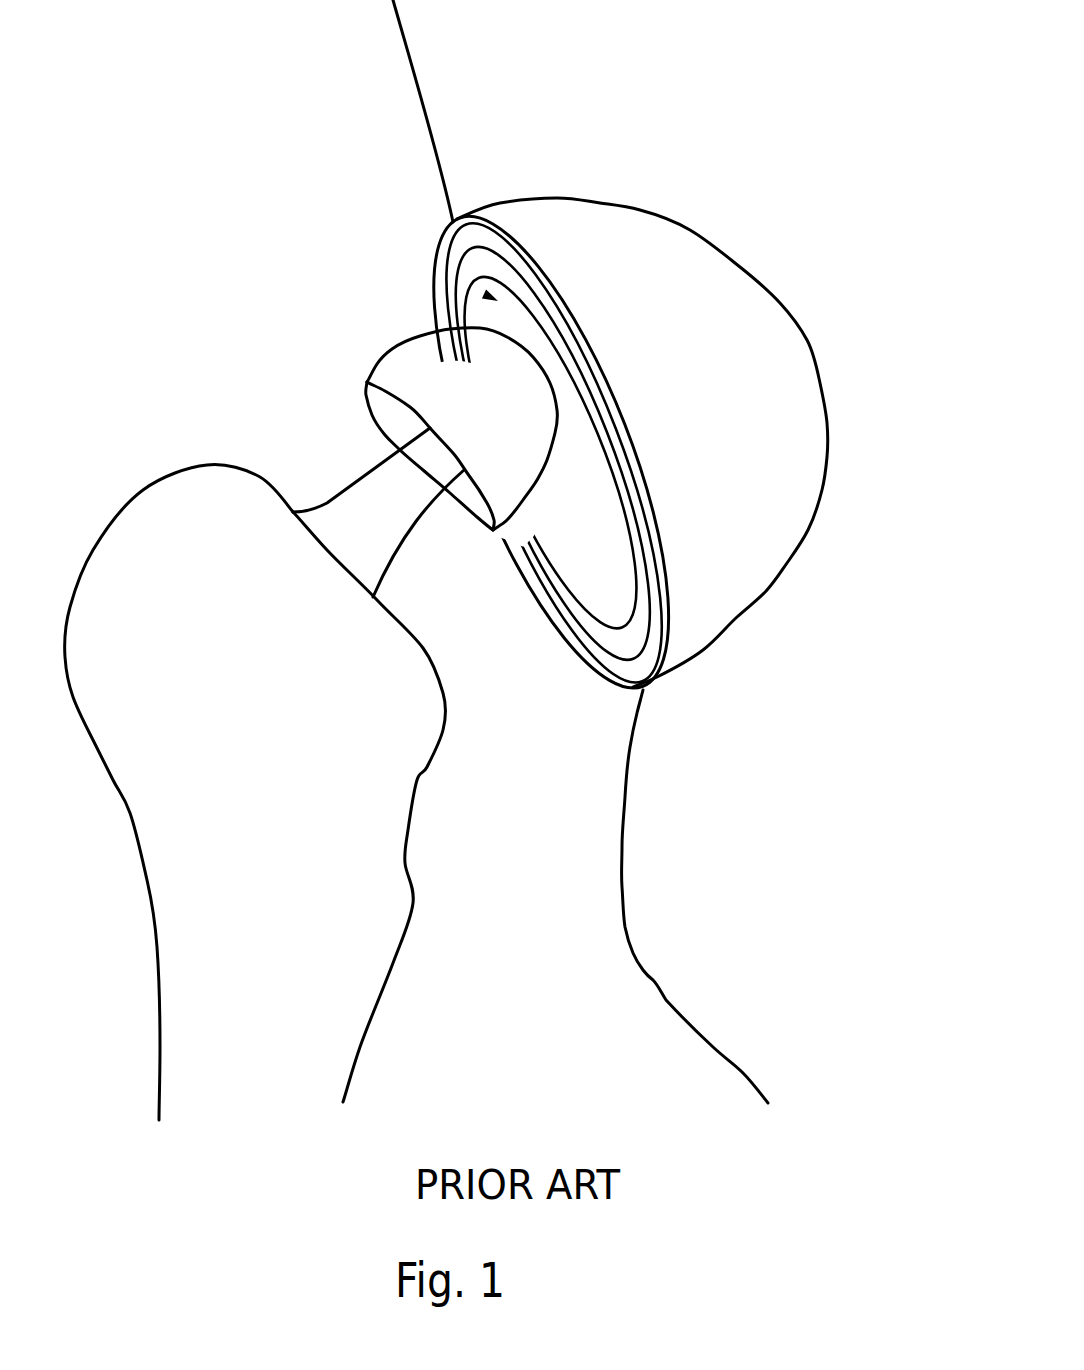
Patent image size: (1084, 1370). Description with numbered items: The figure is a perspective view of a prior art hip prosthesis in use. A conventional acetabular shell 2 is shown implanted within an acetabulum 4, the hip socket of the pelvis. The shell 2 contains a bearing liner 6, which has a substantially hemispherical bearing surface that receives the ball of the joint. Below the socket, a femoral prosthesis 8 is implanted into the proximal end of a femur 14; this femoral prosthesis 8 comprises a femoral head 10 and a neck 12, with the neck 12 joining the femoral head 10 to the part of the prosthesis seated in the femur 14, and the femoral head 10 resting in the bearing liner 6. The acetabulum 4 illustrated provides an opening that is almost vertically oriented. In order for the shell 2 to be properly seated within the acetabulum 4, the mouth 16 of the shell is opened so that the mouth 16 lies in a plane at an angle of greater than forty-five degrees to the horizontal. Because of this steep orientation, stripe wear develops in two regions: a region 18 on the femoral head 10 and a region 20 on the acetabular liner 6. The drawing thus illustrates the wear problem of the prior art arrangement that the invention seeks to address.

The acetabular shell 2 is at (805, 392).
The acetabulum 4 is at (918, 161).
The bearing liner 6 is at (513, 317).
The femoral prosthesis 8 is at (296, 426).
The femoral head 10 is at (397, 368).
The neck 12 is at (372, 548).
The femur 14 is at (158, 798).
The mouth 16 is at (582, 669).
The stripe wear region on femoral head 18 is at (450, 345).
The stripe wear region on acetabular liner 20 is at (452, 222).